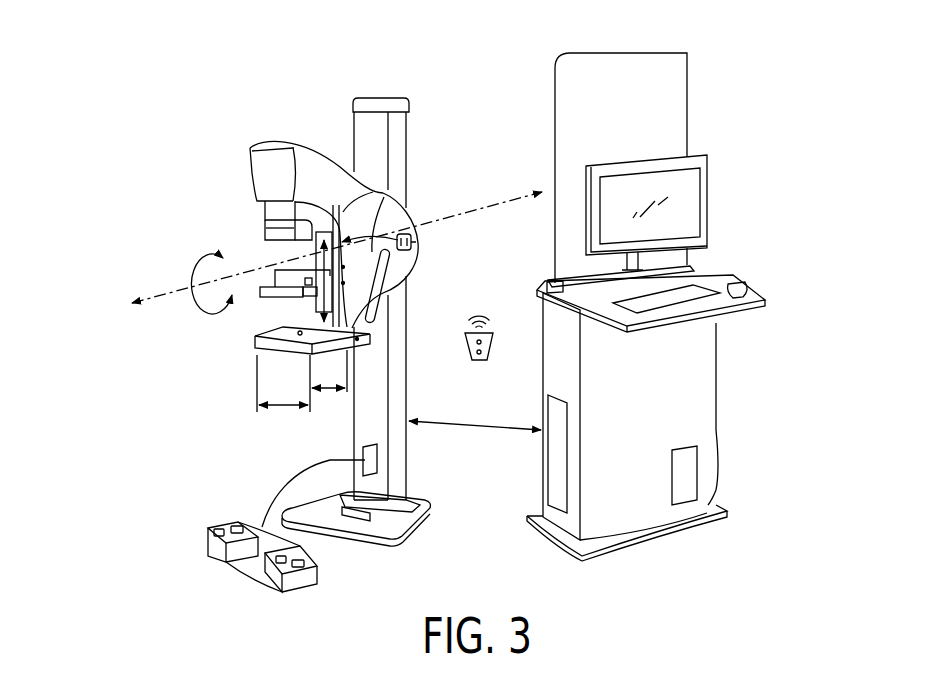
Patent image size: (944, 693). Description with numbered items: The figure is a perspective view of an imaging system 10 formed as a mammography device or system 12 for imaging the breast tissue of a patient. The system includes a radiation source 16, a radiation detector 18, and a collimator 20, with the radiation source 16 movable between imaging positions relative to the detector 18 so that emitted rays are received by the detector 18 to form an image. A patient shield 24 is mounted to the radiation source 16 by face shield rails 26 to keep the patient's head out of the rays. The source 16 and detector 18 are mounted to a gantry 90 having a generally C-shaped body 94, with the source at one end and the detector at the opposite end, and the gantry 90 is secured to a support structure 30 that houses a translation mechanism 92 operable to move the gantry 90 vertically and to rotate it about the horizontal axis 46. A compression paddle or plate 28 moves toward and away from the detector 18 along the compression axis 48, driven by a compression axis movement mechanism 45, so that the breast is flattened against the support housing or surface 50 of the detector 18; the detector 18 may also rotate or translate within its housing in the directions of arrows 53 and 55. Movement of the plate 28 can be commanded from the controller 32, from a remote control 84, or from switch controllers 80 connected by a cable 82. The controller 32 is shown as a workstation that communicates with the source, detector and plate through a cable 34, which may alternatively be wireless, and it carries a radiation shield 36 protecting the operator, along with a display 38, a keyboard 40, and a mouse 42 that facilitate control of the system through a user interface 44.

The imaging system 10 is at (295, 86).
The mammography device or system 12 is at (362, 88).
The radiation source 16 is at (266, 211).
The radiation detector 18 is at (266, 349).
The collimator 20 is at (270, 228).
The patient shield 24 is at (298, 239).
The face shield rails 26 is at (268, 223).
The compression paddle or plate 28 is at (278, 306).
The support structure 30 is at (402, 124).
The controller 32 is at (710, 67).
The cable 34 is at (503, 430).
The radiation shield 36 is at (667, 107).
The display 38 is at (709, 177).
The keyboard 40 is at (664, 310).
The mouse 42 is at (738, 285).
The user interface 44 is at (685, 213).
The compression axis movement mechanism 45 is at (416, 242).
The axis 46 is at (170, 290).
The compression axis 48 is at (328, 307).
The support housing or surface 50 is at (300, 330).
The arrow 53 is at (282, 410).
The arrow 55 is at (330, 393).
The switch controllers 80 is at (243, 580).
The cable 82 is at (280, 492).
The remote control 84 is at (492, 347).
The gantry 90 is at (247, 145).
The translation mechanism 92 is at (417, 211).
The C-shaped body 94 is at (270, 160).